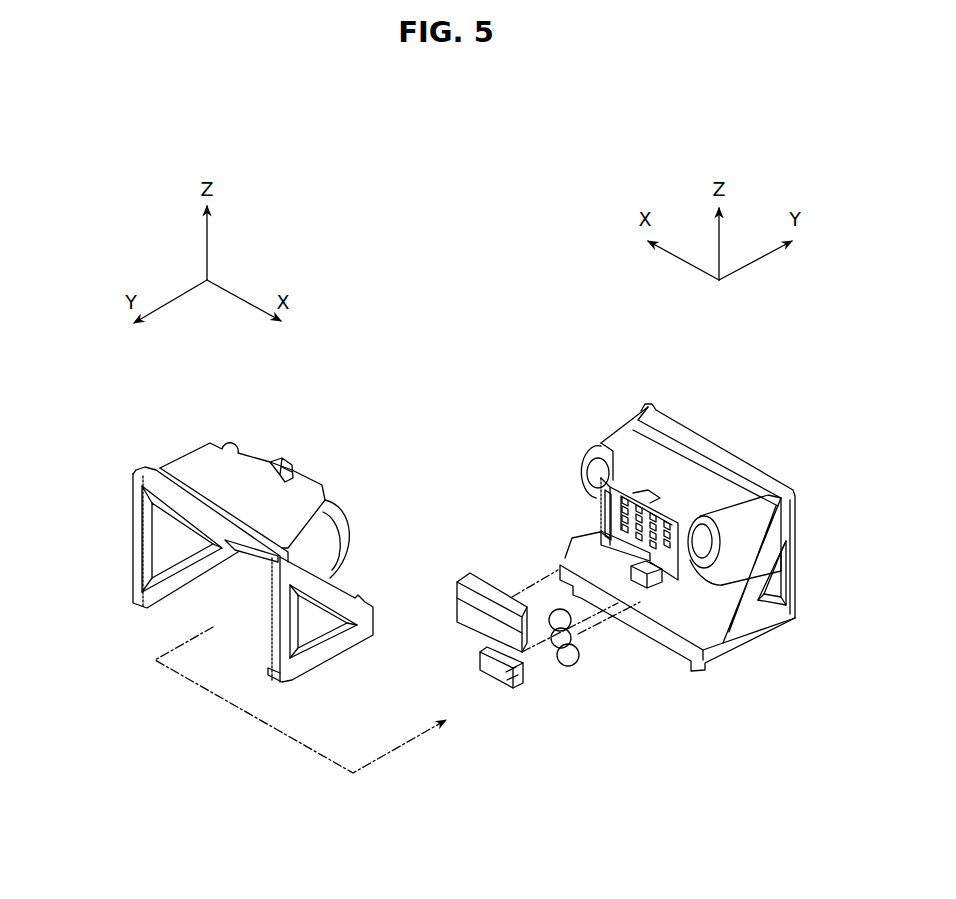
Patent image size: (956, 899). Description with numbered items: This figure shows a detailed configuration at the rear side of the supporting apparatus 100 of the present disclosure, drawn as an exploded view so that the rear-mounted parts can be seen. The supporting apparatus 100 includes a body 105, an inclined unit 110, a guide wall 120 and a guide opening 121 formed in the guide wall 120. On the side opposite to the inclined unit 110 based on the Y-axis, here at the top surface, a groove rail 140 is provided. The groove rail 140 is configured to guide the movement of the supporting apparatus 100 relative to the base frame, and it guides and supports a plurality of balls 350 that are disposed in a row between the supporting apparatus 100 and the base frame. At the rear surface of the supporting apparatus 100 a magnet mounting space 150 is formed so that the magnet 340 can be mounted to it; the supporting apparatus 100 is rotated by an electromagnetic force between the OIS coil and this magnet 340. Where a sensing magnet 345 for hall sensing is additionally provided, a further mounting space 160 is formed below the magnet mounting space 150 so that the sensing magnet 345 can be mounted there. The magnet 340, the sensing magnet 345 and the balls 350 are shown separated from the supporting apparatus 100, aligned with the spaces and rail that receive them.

The supporting apparatus 100 is at (567, 432).
The body 105 is at (197, 467).
The inclined unit 110 is at (253, 551).
The guide wall 120 is at (325, 654).
The guide opening 121 is at (168, 534).
The groove rail 140 is at (696, 513).
The magnet mounting space 150 is at (594, 512).
The mounting space 160 is at (631, 568).
The magnet 340 is at (477, 622).
The sensing magnet 345 is at (500, 683).
The balls 350 is at (571, 664).